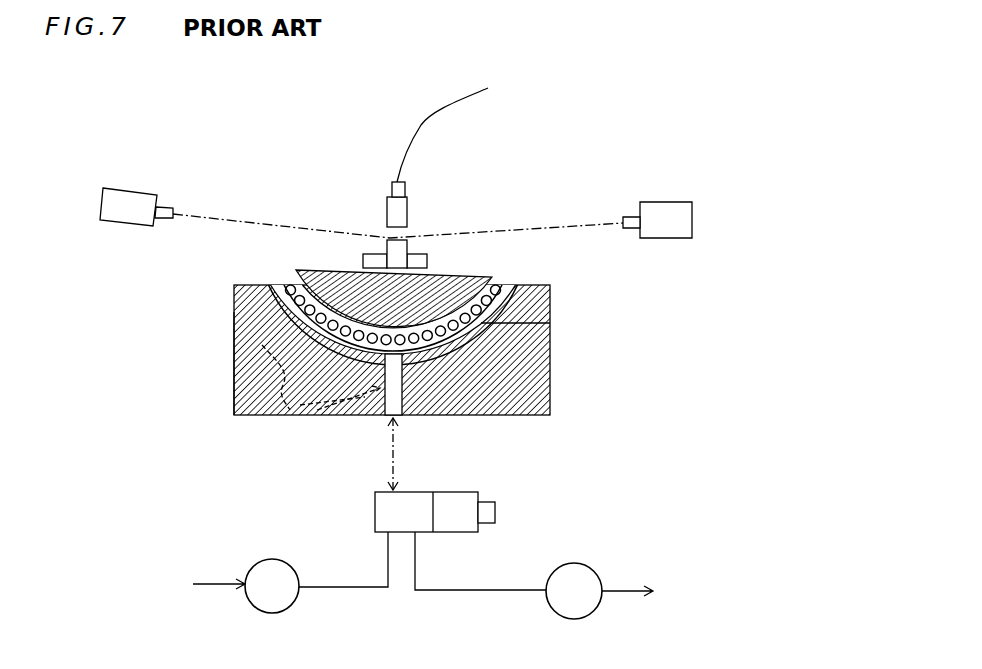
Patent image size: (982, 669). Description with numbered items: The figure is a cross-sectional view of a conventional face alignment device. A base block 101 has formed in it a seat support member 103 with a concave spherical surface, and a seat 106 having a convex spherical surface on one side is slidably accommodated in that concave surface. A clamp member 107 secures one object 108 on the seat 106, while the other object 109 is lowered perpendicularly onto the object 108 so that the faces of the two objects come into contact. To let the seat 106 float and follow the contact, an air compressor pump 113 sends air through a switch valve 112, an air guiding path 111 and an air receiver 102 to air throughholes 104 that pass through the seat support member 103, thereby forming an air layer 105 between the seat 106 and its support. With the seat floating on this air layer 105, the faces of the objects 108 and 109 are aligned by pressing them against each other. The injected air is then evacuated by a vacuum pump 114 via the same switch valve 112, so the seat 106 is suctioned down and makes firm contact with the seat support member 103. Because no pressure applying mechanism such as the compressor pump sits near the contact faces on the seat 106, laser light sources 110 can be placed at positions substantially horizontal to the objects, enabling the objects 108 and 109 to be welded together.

The base block 101 is at (550, 407).
The air receiver 102 is at (257, 410).
The seat support member 103 is at (234, 312).
The air throughholes 104 is at (550, 325).
The air layer 105 is at (550, 290).
The seat 106 is at (490, 277).
The clamp member 107 is at (384, 239).
The object 108 is at (386, 256).
The other object 109 is at (408, 198).
The laser light sources 110 is at (133, 226).
The air guiding path 111 is at (307, 415).
The switch valve 112 is at (480, 493).
The air compressor pump 113 is at (257, 562).
The vacuum pump 114 is at (594, 566).